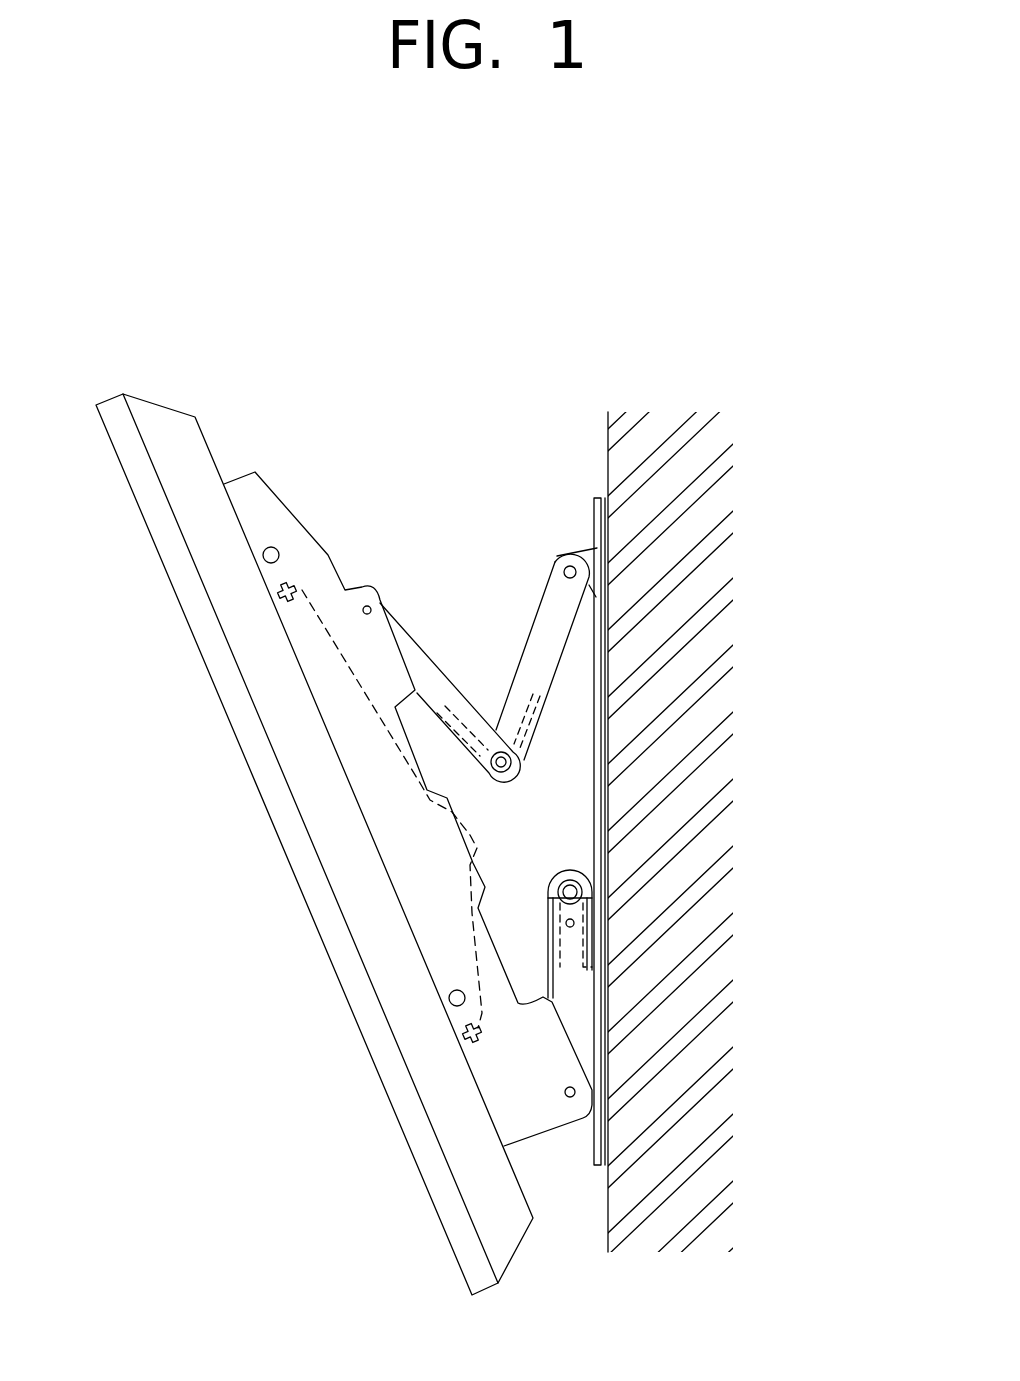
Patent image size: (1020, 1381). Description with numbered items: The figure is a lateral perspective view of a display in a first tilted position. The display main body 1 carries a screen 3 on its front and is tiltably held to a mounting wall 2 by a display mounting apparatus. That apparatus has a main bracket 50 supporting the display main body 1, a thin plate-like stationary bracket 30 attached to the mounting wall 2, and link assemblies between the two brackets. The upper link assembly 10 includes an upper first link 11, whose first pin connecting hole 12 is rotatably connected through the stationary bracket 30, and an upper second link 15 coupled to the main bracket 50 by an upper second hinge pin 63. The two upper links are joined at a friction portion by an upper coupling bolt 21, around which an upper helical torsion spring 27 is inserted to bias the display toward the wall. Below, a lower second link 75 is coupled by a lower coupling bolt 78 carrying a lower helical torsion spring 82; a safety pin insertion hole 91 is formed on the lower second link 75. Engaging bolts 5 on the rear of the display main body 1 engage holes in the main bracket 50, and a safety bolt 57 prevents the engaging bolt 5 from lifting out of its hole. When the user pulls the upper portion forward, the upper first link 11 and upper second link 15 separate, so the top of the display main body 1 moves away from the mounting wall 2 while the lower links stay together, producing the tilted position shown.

The display main body 1 is at (418, 1195).
The mounting wall 2 is at (717, 502).
The screen 3 is at (353, 985).
The engaging bolt 5 is at (467, 833).
The upper link assembly 10 is at (484, 668).
The upper first link 11 is at (537, 680).
The first pin connecting hole 12 is at (566, 563).
The upper second link 15 is at (425, 678).
The upper coupling bolt 21 is at (508, 777).
The upper helical torsion spring 27 is at (540, 740).
The stationary bracket 30 is at (594, 498).
The main bracket 50 is at (283, 527).
The safety bolt 57 is at (449, 998).
The upper second hinge pin 63 is at (380, 598).
The lower second link 75 is at (572, 1003).
The lower coupling bolt 78 is at (580, 892).
The lower helical torsion spring 82 is at (608, 967).
The safety pin insertion hole 91 is at (575, 923).